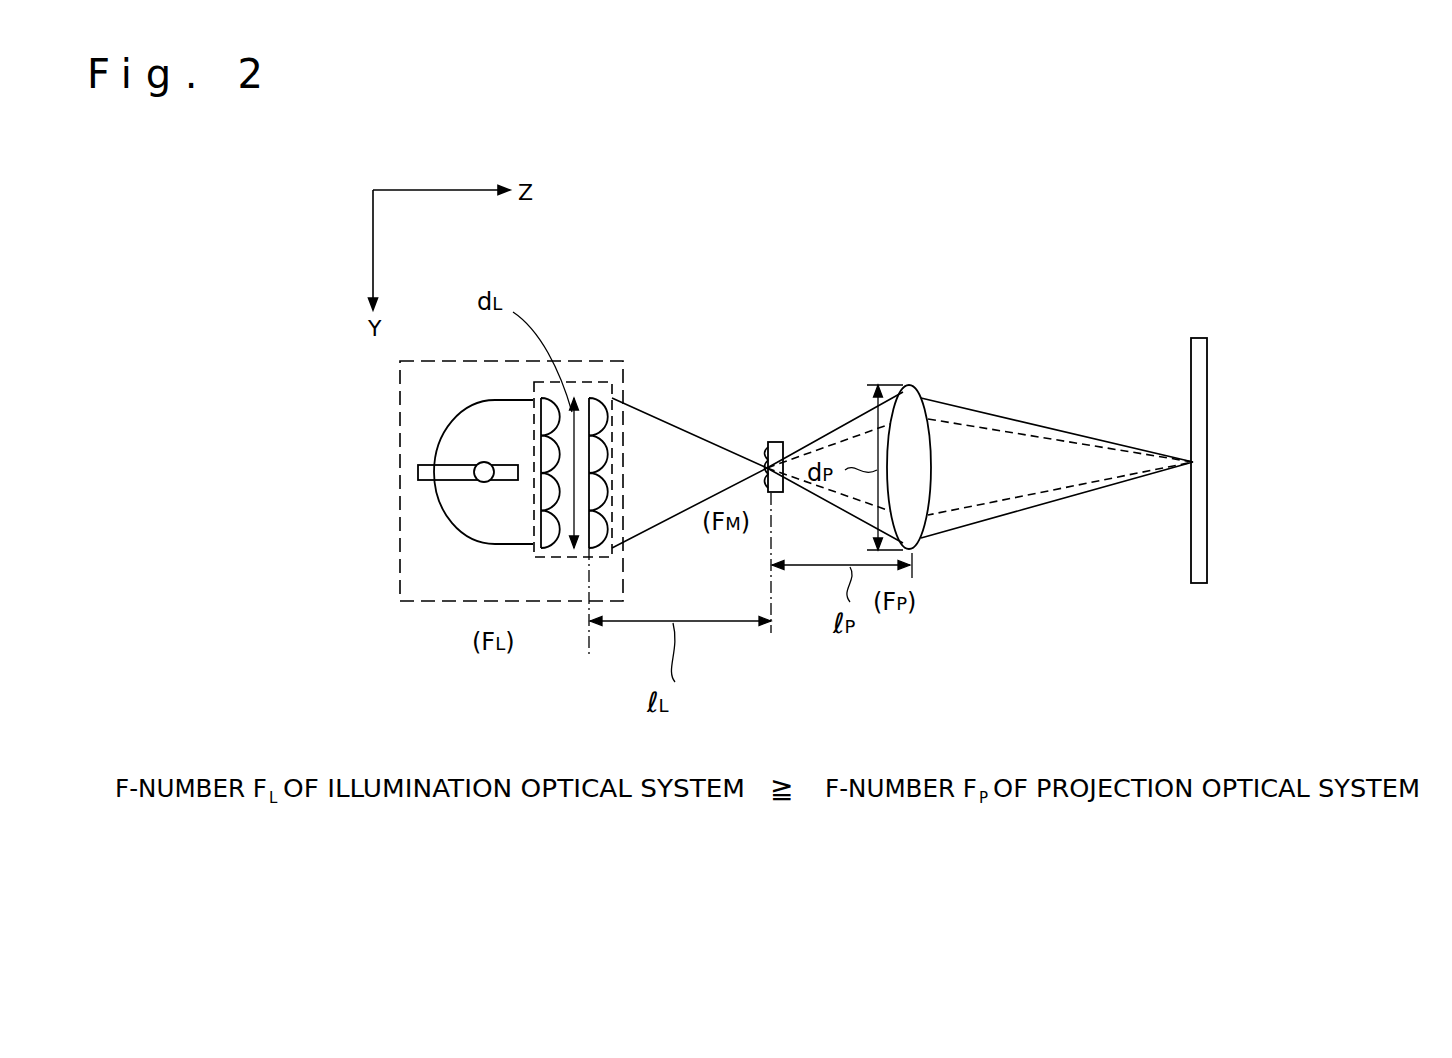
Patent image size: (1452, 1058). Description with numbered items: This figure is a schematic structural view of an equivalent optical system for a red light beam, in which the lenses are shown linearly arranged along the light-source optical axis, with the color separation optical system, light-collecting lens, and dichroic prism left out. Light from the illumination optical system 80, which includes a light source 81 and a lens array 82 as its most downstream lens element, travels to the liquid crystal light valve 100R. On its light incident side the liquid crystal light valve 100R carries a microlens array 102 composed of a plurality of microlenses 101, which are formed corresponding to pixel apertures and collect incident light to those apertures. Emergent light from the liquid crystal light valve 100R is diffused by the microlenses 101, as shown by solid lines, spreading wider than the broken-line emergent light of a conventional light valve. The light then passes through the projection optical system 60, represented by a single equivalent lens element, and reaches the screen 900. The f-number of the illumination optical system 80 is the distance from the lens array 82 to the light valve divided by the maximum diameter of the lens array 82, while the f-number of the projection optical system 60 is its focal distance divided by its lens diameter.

The illumination optical system 80 is at (573, 360).
The light source lamp with reflector 81 is at (447, 518).
The lens array integrator 82 is at (613, 381).
The liquid crystal light valve 100R is at (783, 442).
The microlenses 101 is at (759, 452).
The microlens array 102 is at (757, 452).
The projection optical system 60 is at (921, 393).
The screen 900 is at (1190, 362).